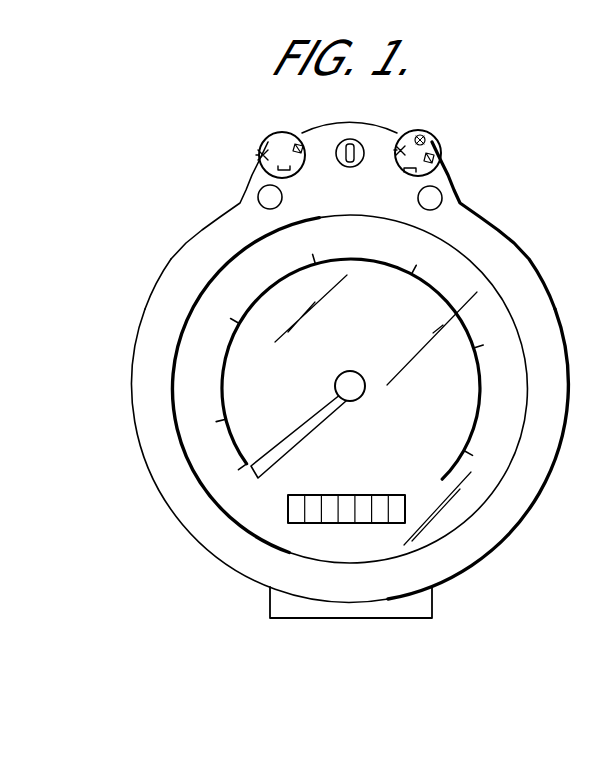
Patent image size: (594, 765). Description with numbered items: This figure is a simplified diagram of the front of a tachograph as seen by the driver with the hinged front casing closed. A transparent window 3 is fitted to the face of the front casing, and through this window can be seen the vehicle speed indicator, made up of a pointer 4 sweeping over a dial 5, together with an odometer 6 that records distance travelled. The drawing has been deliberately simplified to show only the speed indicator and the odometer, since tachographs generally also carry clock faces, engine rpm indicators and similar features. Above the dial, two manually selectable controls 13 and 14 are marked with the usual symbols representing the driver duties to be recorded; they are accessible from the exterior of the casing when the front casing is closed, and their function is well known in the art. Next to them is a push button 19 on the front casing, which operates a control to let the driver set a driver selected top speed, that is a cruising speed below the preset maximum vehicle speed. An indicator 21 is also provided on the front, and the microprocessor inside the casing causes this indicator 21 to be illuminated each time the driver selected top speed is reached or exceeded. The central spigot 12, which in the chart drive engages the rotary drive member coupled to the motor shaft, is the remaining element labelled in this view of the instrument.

The central spigot 12 is at (520, 258).
The manually selectable control 13 is at (274, 139).
The manually selectable control 14 is at (437, 143).
The push button 19 is at (266, 195).
The indicator 21 is at (433, 197).
The transparent window 3 is at (468, 500).
The pointer 4 is at (313, 417).
The dial 5 is at (227, 356).
The odometer 6 is at (363, 494).